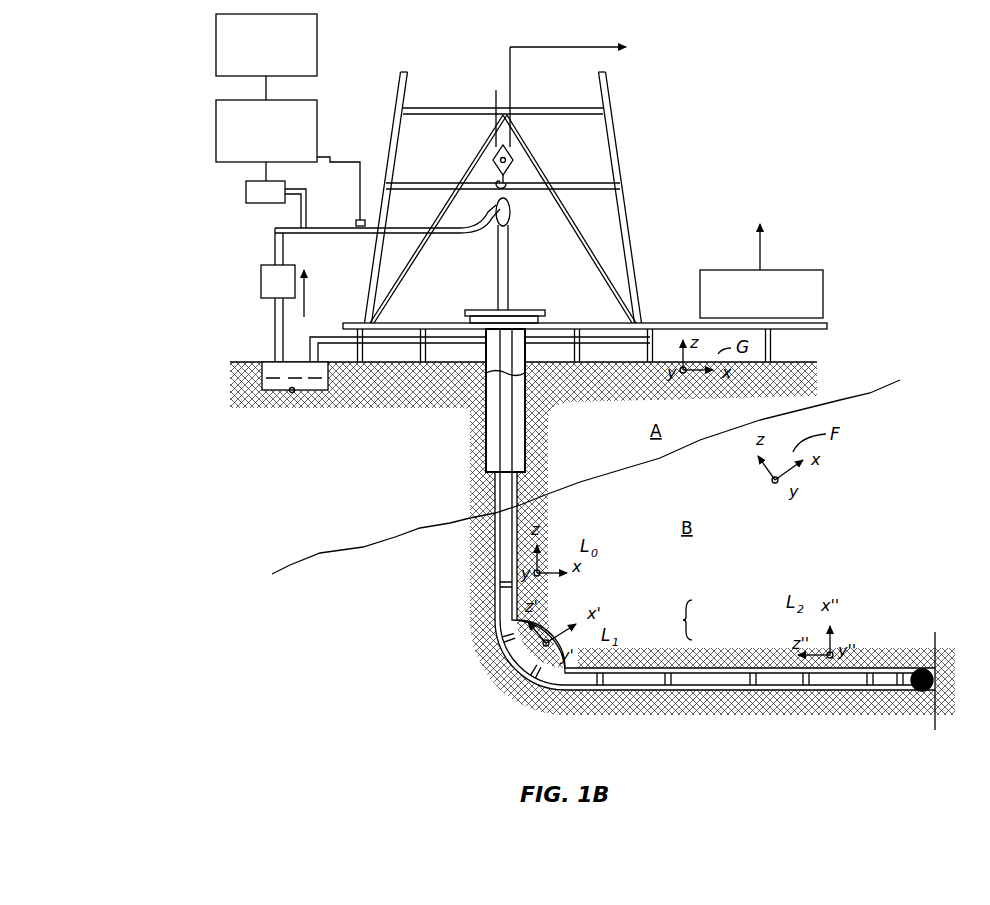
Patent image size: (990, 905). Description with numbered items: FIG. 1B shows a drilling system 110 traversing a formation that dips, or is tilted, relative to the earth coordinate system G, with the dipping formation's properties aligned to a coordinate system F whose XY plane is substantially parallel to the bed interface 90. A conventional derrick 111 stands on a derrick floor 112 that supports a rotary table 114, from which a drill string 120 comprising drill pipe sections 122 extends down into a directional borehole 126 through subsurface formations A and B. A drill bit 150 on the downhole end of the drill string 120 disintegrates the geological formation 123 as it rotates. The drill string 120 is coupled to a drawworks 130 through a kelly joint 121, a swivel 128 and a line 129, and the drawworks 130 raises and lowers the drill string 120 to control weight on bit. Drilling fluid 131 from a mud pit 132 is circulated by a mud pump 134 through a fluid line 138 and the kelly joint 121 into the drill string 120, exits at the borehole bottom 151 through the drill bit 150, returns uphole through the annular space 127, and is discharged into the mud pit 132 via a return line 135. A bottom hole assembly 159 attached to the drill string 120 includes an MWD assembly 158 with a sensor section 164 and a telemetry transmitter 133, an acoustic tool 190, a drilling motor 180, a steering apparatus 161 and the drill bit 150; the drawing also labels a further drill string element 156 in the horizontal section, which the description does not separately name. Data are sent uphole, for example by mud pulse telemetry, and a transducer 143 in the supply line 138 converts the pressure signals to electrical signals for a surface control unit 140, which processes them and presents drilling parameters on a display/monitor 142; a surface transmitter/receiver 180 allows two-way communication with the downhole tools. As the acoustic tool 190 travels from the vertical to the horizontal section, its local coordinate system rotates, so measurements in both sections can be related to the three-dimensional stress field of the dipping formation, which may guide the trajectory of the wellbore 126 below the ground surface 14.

The ground surface 14 is at (800, 362).
The bed interface 90 is at (875, 400).
The drilling system 110 is at (454, 48).
The derrick 111 is at (625, 198).
The derrick floor 112 is at (640, 322).
The rotary table 114 is at (528, 312).
The drill string 120 is at (520, 527).
The kelly joint 121 is at (511, 277).
The drill pipe section 122 is at (490, 520).
The geological formation 123 is at (917, 660).
The directional borehole 126 is at (512, 668).
The annular space 127 is at (568, 676).
The swivel 128 is at (500, 232).
The line 129 is at (512, 72).
The drawworks 130 is at (790, 268).
The drilling fluid 131 is at (268, 366).
The mud pit 132 is at (291, 393).
The telemetry transmitter 133 is at (760, 672).
The mud pump 134 is at (261, 280).
The return line 135 is at (460, 345).
The fluid line 138 is at (358, 234).
The surface control unit 140 is at (216, 132).
The display/monitor 142 is at (216, 44).
The transducer 143 is at (357, 221).
The drill bit 150 is at (933, 667).
The borehole bottom 151 is at (933, 716).
The drill pipe 156 is at (680, 678).
The measurement while drilling (MWD) assembly 158 is at (717, 635).
The bottom hole assembly (BHA) 159 is at (829, 557).
The steering apparatus 161 is at (884, 686).
The sensor section 164 is at (787, 672).
The drilling motor 180 is at (246, 190).
The acoustic tool 190 is at (815, 686).